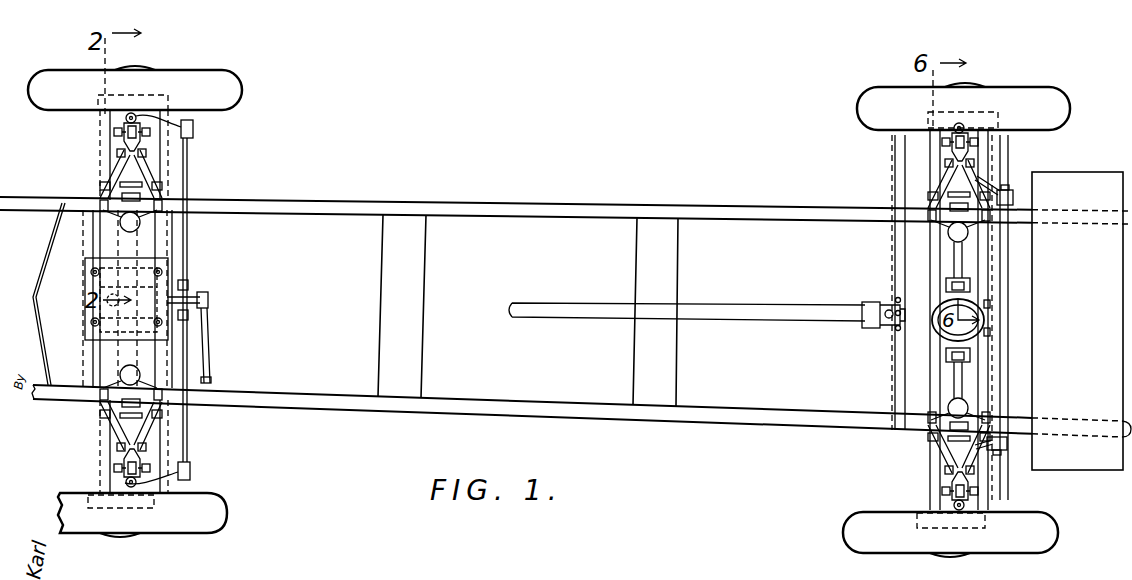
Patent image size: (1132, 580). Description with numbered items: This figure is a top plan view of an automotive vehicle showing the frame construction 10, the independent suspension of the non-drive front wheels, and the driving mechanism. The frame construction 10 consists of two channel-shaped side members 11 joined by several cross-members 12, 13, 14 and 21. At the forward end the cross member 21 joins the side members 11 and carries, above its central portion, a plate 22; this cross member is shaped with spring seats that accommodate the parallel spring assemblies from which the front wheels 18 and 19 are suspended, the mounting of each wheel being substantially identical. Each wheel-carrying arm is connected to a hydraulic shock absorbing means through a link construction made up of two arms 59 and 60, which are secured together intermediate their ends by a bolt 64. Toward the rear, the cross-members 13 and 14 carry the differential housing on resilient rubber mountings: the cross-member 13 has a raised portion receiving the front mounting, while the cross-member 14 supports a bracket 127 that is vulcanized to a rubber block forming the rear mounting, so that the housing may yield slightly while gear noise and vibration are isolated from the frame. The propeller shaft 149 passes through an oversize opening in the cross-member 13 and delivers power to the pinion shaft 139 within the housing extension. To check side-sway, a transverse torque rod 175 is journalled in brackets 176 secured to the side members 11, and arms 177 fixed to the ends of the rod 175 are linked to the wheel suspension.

The frame construction 10 is at (545, 200).
The side members 11 is at (802, 212).
The cross-members 12 is at (413, 272).
The cross-member 13 is at (900, 268).
The cross-member 14 is at (1010, 270).
The front wheel 18 is at (224, 90).
The front wheel 19 is at (210, 512).
The cross member 21 is at (90, 242).
The plate 22 is at (108, 337).
The arm 59 is at (137, 158).
The arm 60 is at (125, 160).
The bolt 64 is at (115, 151).
The bracket 127 is at (988, 322).
The shaft 139 is at (888, 322).
The propeller shaft 149 is at (775, 292).
The torque rod 175 is at (1000, 308).
The brackets 176 is at (1020, 190).
The arms 177 is at (993, 185).